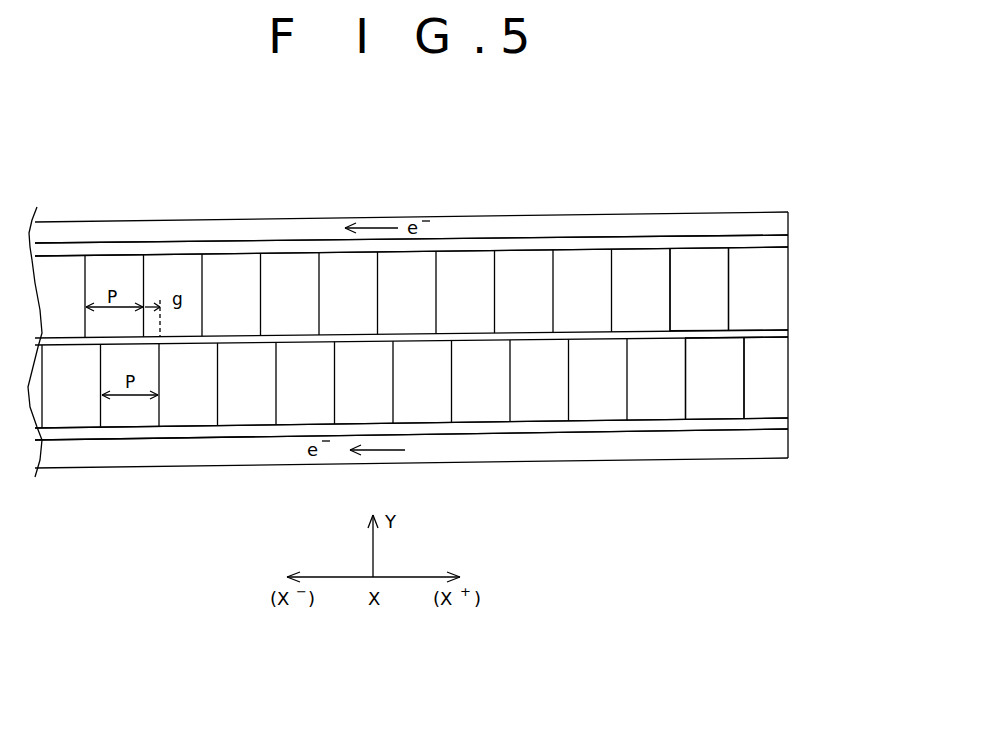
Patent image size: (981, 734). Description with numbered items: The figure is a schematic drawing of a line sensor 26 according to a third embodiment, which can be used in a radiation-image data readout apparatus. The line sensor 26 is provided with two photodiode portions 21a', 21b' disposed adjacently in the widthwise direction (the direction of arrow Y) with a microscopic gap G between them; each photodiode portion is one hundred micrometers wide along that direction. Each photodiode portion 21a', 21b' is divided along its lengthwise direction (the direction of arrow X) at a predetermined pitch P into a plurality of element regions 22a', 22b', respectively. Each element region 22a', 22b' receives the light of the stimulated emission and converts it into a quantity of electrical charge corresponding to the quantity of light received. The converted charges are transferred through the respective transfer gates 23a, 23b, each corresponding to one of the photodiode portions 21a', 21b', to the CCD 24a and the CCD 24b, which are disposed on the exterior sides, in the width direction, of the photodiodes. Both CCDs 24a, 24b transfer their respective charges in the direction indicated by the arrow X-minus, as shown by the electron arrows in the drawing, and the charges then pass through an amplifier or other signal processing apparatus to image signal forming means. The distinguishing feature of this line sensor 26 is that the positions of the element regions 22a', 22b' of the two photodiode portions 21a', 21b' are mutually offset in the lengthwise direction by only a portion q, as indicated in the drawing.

The line sensor 26 is at (647, 178).
The CCD 24a is at (788, 218).
The transfer gate 23a is at (788, 243).
The element regions 22a' is at (449, 292).
The photodiode portion 21a' is at (766, 290).
The photodiode portion 21b' is at (774, 375).
The element regions 22b' is at (449, 382).
The transfer gate 23b is at (788, 423).
The CCD 24b is at (788, 447).